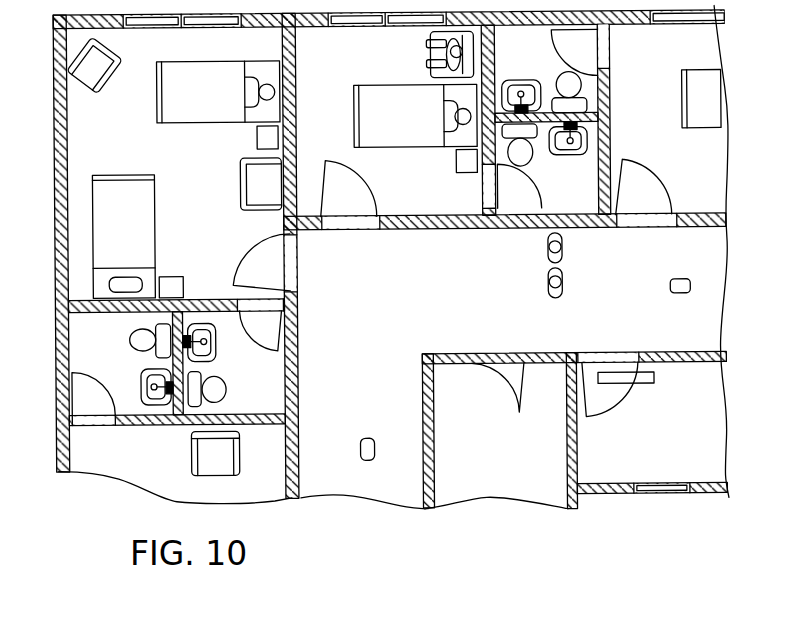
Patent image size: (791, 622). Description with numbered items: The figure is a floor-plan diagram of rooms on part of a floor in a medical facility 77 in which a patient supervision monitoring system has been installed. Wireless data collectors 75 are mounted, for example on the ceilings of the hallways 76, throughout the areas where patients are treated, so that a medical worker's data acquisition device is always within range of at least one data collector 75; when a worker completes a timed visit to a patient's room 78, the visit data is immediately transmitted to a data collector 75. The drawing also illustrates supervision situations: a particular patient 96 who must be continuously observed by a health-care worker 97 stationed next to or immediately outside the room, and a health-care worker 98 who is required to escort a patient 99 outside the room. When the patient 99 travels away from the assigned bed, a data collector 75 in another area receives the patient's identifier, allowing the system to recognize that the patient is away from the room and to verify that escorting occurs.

The wireless data collector 75 is at (358, 447).
The hallway 76 is at (355, 303).
The medical facility 77 is at (489, 516).
The patient's room 78 is at (308, 126).
The patient 96 is at (446, 119).
The health-care worker 97 is at (431, 63).
The health-care worker 98 is at (548, 259).
The patient 99 is at (548, 292).